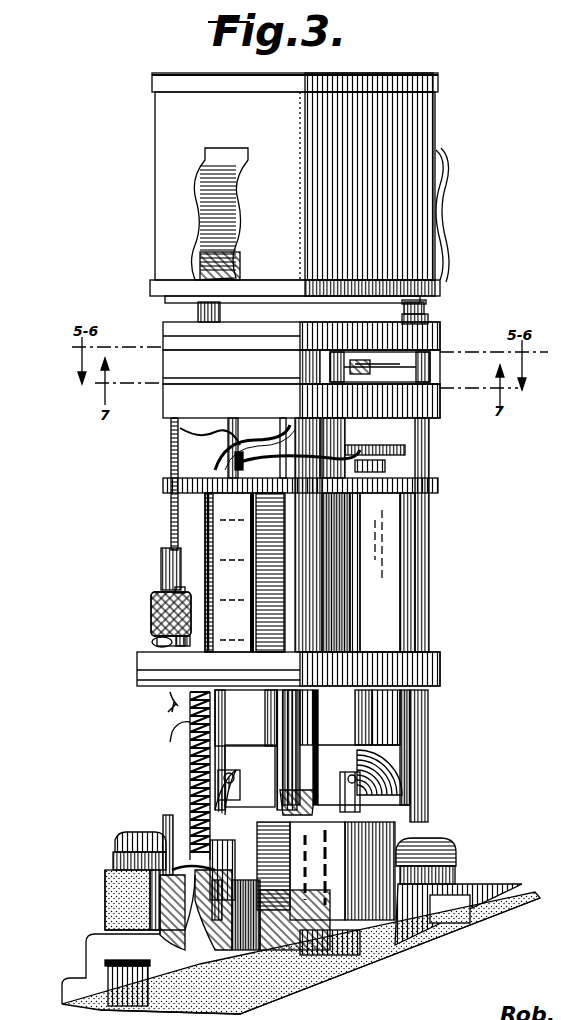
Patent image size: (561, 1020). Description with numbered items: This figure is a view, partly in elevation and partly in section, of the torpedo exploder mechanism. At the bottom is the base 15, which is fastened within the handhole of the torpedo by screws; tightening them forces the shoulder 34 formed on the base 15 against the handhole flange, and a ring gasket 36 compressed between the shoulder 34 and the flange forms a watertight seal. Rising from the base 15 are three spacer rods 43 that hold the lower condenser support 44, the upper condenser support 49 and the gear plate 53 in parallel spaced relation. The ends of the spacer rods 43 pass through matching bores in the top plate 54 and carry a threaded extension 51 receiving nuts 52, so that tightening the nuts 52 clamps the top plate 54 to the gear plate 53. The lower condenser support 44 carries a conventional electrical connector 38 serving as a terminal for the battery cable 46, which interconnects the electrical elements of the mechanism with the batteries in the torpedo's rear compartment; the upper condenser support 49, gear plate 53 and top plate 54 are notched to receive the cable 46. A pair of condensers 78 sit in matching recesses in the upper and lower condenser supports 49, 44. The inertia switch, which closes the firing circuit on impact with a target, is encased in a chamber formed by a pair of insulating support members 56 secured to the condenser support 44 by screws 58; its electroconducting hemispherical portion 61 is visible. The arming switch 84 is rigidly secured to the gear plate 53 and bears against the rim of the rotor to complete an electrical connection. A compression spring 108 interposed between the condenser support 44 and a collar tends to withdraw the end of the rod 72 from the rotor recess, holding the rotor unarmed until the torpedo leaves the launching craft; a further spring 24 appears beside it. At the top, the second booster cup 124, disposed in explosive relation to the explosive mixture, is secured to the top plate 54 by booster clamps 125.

The base 15 is at (400, 945).
The spring 24 is at (190, 782).
The shoulder 34 is at (113, 868).
The ring gasket 36 is at (118, 842).
The electrical connector 38 is at (154, 594).
The spacer rods 43 is at (430, 446).
The lower condenser support 44 is at (440, 672).
The cable 46 is at (171, 516).
The upper condenser support 49 is at (440, 490).
The threaded extension 51 is at (428, 306).
The nuts 52 is at (198, 314).
The gear plate 53 is at (163, 362).
The top plate 54 is at (163, 336).
The insulating support members 56 is at (258, 733).
The screws 58 is at (232, 776).
The hemispherical portion 61 is at (398, 778).
The rod 72 is at (212, 428).
The condensers 78 is at (234, 571).
The arming switch 84 is at (400, 368).
The compression spring 108 is at (188, 728).
The second booster cup 124 is at (237, 131).
The booster clamps 125 is at (235, 230).